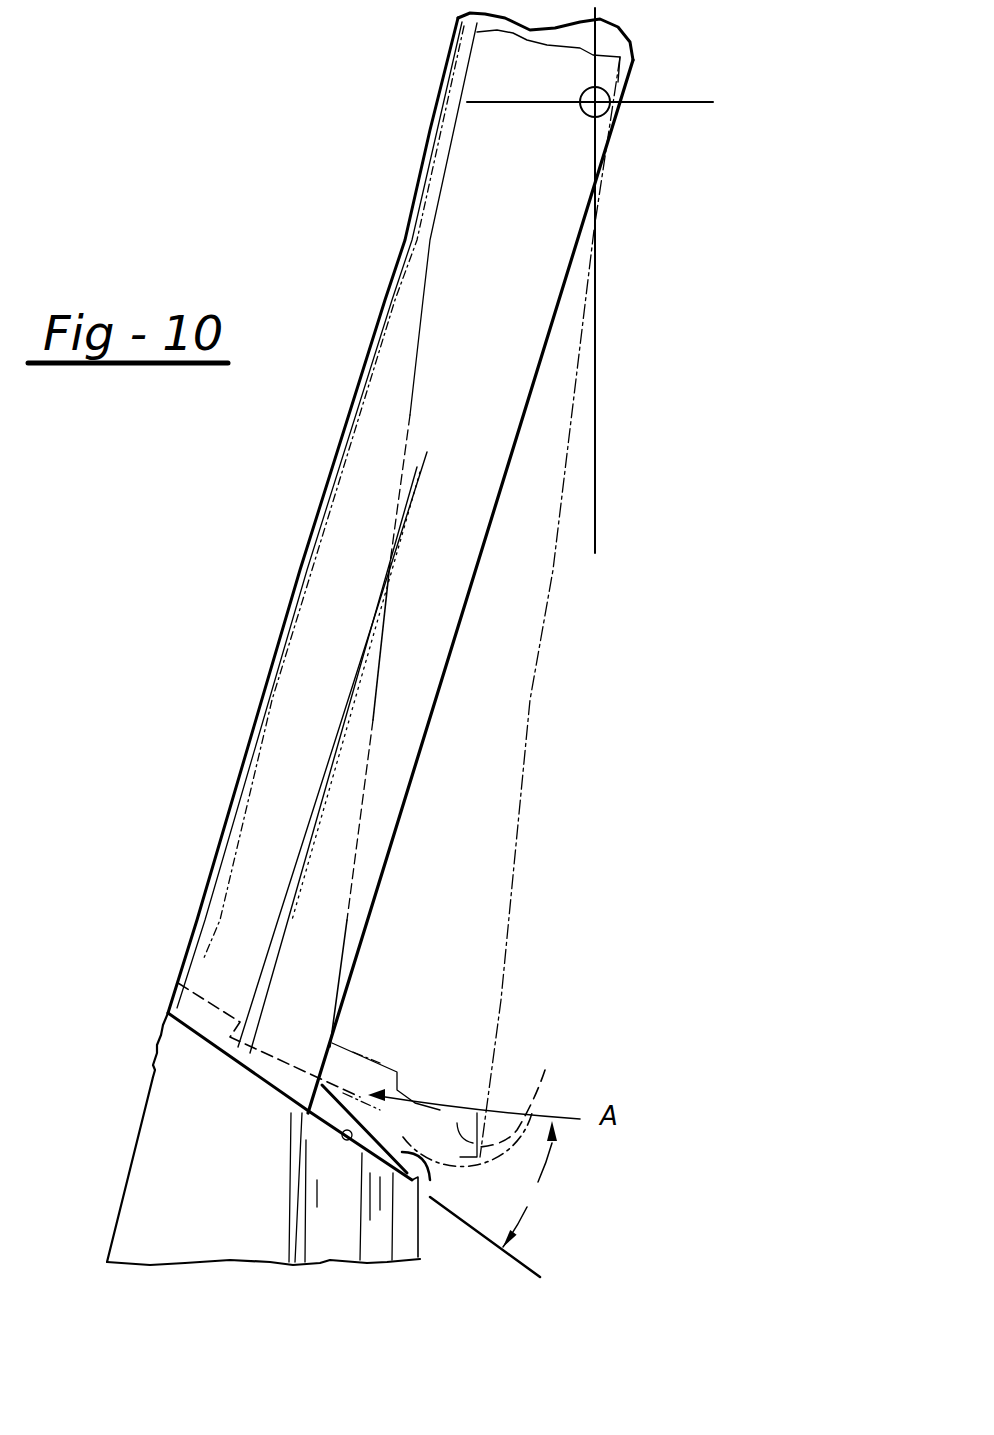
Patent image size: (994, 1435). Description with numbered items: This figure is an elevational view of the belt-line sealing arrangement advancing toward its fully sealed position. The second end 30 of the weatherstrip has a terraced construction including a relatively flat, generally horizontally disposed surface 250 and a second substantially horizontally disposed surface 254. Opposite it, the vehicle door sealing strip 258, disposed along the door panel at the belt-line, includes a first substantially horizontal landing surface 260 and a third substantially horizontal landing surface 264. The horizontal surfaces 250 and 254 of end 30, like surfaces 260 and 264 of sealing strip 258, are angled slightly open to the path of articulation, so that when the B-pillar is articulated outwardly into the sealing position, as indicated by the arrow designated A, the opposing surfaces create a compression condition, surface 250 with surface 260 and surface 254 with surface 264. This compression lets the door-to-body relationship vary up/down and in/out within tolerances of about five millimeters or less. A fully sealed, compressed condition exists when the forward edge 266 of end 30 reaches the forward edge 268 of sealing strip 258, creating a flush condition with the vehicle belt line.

The second end of the weatherstrip 30 is at (210, 953).
The generally horizontally disposed surface 250 is at (530, 1093).
The second substantially horizontally disposed surface 254 is at (440, 1167).
The vehicle door sealing strip 258 is at (157, 1153).
The first substantially horizontally disposed landing surface 260 is at (430, 1180).
The third substantially horizontal landing surface 264 is at (357, 1147).
The forward edge of end 30 266 is at (177, 977).
The forward edge of sealing strip 268 is at (155, 1048).